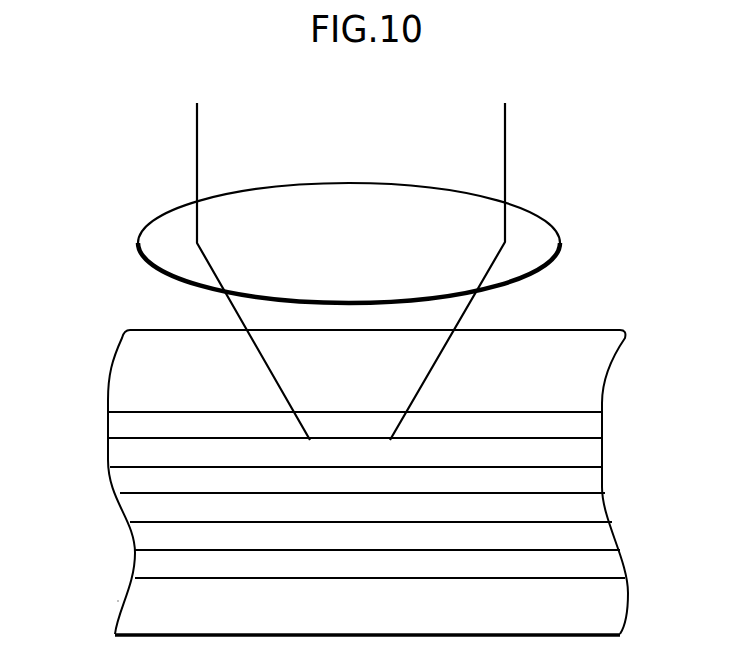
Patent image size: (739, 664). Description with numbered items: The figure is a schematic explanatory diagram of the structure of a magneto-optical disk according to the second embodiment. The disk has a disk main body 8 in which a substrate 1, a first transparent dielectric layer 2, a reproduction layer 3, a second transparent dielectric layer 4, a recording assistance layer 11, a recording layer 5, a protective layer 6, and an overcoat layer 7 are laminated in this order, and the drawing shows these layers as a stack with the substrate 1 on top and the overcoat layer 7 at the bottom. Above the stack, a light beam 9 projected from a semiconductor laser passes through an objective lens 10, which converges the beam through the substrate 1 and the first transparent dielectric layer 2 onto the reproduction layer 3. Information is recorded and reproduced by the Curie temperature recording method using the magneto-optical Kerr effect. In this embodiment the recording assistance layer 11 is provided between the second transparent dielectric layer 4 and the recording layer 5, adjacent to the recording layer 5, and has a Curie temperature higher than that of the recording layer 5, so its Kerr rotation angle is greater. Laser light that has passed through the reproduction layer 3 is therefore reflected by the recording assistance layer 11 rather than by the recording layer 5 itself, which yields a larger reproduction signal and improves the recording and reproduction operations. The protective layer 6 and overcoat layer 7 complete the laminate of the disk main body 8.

The substrate 1 is at (597, 378).
The first transparent dielectric layer 2 is at (593, 425).
The reproduction layer 3 is at (597, 453).
The second transparent dielectric layer 4 is at (595, 483).
The recording assistance layer 11 is at (600, 509).
The recording layer 5 is at (605, 537).
The protective layer 6 is at (610, 563).
The overcoat layer 7 is at (618, 608).
The disk main body 8 is at (103, 332).
The light beam 9 is at (505, 133).
The objective lens 10 is at (560, 236).